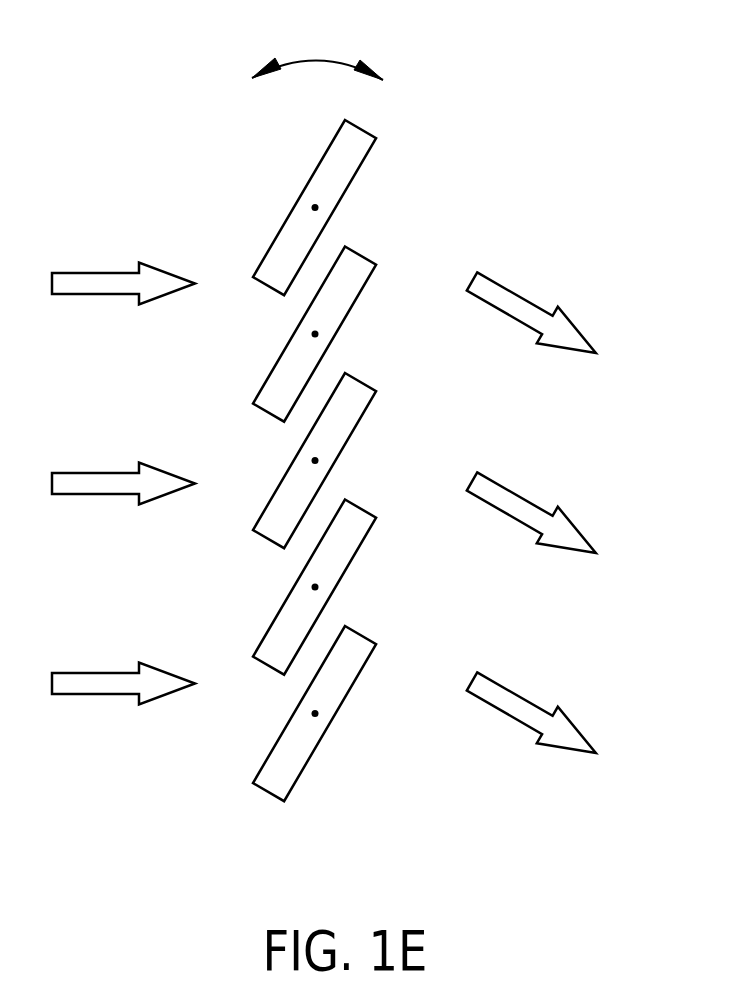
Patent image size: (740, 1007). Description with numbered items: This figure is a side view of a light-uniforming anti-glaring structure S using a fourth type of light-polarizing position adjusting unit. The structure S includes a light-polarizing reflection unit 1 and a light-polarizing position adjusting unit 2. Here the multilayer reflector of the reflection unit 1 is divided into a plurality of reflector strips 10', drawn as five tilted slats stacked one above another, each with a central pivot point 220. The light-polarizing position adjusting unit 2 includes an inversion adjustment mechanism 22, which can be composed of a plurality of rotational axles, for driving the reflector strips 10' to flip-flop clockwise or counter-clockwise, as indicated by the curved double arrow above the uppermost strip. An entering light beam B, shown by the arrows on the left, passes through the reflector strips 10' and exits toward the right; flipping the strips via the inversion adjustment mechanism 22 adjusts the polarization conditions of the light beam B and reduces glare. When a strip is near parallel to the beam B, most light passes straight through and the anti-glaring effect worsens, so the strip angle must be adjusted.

The light-uniforming anti-glaring structure S is at (77, 34).
The light beam B is at (108, 272).
The light-polarizing reflection unit 1 is at (365, 460).
The reflector strips 10' is at (349, 207).
The light-polarizing position adjusting unit 2 is at (416, 458).
The inversion adjustment mechanism 22 is at (400, 458).
The pivot shaft 220 is at (315, 208).